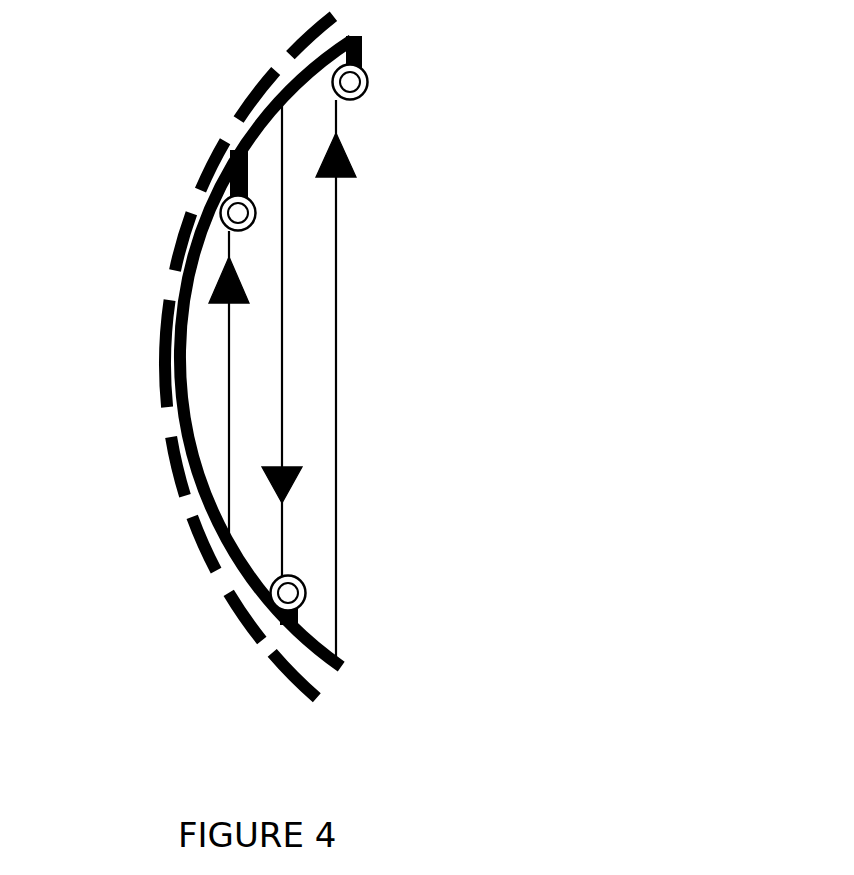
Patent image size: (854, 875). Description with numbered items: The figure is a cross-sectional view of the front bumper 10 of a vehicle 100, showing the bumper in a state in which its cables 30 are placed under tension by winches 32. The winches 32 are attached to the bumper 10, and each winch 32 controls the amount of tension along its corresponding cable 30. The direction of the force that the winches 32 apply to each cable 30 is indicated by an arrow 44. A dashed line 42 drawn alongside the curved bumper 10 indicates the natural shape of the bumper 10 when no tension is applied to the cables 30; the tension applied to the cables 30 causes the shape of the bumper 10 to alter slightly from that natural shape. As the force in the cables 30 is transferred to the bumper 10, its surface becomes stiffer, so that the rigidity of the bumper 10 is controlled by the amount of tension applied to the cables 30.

The vehicle 100 is at (101, 50).
The front bumper 10 is at (327, 668).
The cables 30 is at (338, 232).
The winches 32 is at (366, 90).
The dashed line 42 is at (207, 162).
The arrow 44 is at (357, 158).